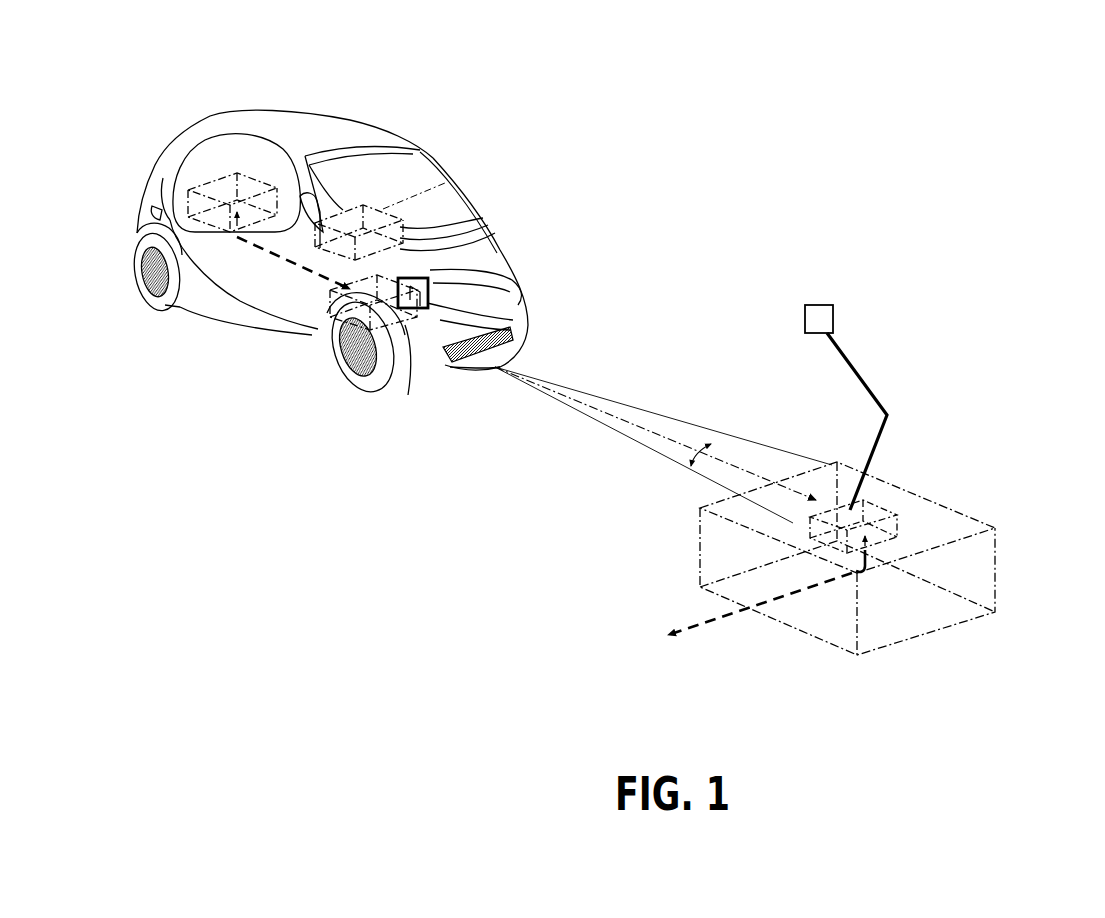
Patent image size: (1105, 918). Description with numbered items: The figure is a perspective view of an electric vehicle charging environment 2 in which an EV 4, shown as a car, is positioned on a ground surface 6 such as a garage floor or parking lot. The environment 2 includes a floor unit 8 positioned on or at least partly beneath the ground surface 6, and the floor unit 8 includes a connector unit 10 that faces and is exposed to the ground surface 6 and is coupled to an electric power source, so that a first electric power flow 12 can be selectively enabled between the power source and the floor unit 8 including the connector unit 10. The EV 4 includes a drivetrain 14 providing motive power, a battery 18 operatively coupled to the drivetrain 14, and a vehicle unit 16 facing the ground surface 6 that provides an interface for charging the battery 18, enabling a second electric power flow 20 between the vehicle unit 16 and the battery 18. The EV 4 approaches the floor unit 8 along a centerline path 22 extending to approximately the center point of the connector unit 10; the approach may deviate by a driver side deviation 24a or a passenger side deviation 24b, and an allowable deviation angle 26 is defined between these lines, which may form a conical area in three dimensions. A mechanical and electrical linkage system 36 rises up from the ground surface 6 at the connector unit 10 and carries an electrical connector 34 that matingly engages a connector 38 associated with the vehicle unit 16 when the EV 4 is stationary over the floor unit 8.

The electric vehicle charging environment 2 is at (931, 165).
The electric vehicle 4 is at (447, 172).
The ground surface 6 is at (292, 398).
The floor unit 8 is at (942, 503).
The connector unit 10 is at (877, 504).
The first electric power flow 12 is at (697, 618).
The drivetrain 14 is at (497, 206).
The vehicle unit 16 is at (400, 324).
The battery 18 is at (232, 174).
The second electric power flow 20 is at (290, 263).
The centerline path 22 is at (650, 422).
The driver side deviation 24a is at (763, 452).
The passenger side deviation 24b is at (572, 407).
The allowable deviation angle 26 is at (689, 467).
The electrical connector 34 is at (822, 320).
The mechanical and electrical linkage system 36 is at (848, 365).
The connector 38 is at (428, 285).